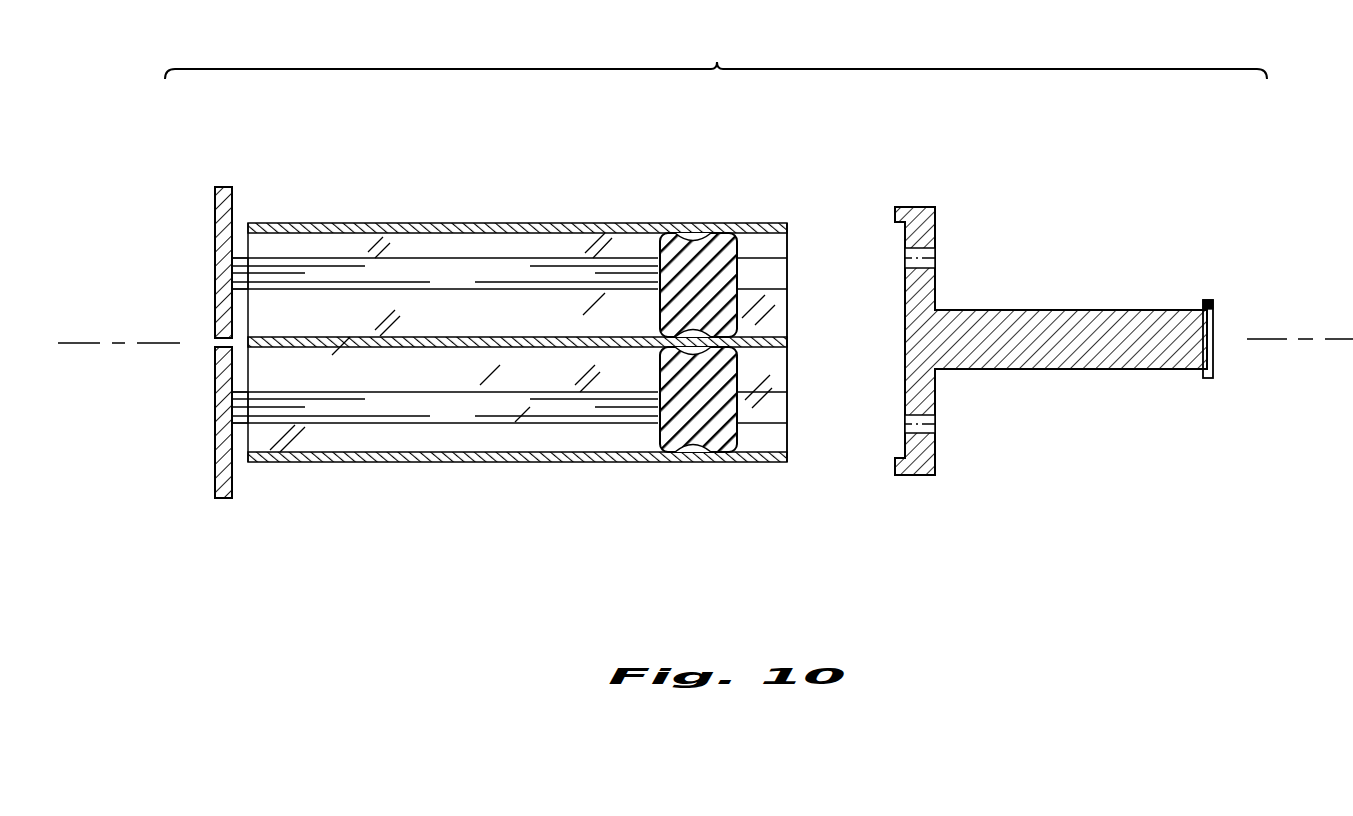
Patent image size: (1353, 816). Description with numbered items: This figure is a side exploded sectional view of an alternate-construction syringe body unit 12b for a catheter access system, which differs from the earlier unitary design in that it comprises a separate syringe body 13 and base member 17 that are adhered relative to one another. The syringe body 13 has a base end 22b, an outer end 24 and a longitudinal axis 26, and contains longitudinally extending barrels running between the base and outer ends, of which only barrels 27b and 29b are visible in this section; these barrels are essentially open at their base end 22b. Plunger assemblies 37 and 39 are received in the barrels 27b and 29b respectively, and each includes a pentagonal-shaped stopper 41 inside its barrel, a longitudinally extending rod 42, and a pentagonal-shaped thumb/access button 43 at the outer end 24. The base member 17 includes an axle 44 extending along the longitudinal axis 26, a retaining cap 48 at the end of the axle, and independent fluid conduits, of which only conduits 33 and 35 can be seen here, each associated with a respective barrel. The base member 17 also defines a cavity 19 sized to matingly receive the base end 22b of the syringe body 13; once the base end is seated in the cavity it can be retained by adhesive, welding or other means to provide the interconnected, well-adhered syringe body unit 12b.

The syringe body unit 12b is at (740, 50).
The outer end 24 is at (181, 314).
The plunger assembly 37 is at (212, 235).
The plunger assembly 39 is at (212, 418).
The thumb/access button 43 is at (222, 281).
The barrel 27b is at (383, 247).
The barrel 29b is at (497, 437).
The syringe body 13 is at (517, 331).
The rod 42 is at (451, 275).
The stopper 41 is at (664, 233).
The base end 22b is at (826, 212).
The cavity 19 is at (854, 445).
The base member 17 is at (1095, 335).
The fluid conduit 33 is at (925, 262).
The fluid conduit 35 is at (925, 428).
The axle 44 is at (1108, 345).
The retaining cap 48 is at (1213, 303).
The longitudinal axis 26 is at (77, 345).